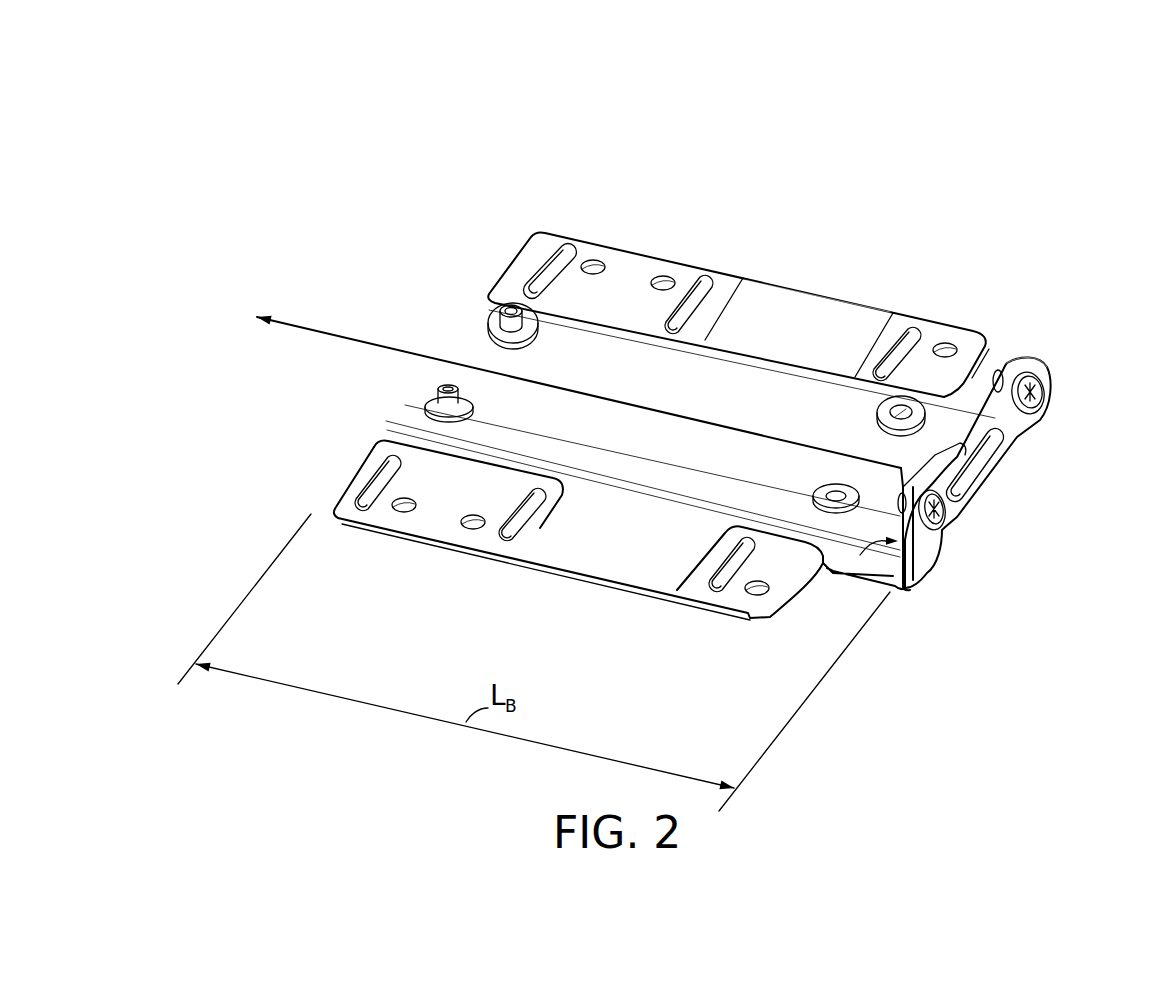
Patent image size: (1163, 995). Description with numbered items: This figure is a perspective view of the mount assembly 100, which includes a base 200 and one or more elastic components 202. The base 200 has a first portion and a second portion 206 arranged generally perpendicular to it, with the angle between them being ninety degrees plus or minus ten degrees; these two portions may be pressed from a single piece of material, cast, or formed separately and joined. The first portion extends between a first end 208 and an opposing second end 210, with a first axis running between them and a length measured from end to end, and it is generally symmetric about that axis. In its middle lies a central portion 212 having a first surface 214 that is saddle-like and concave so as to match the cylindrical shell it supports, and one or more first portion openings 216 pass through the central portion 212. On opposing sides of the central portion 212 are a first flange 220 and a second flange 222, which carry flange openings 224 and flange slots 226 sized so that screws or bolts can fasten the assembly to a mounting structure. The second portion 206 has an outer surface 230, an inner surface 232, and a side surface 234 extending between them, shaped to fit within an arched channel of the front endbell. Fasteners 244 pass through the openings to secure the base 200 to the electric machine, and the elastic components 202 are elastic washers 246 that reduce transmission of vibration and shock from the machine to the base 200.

The mount assembly 100 is at (665, 130).
The base 200 is at (533, 233).
The elastic component 202 is at (427, 393).
The second portion 206 is at (1043, 398).
The first end 208 is at (903, 592).
The second end 210 is at (427, 402).
The central portion 212 is at (717, 370).
The first surface 214 is at (783, 383).
The first portion opening 216 is at (900, 410).
The first flange 220 is at (620, 272).
The second flange 222 is at (622, 573).
The flange opening 224 is at (467, 527).
The flange slot 226 is at (342, 514).
The outer surface 230 is at (1013, 415).
The inner surface 232 is at (972, 428).
The side surface 234 is at (1004, 362).
The fastener 244 is at (934, 518).
The elastic washer 246 is at (489, 310).